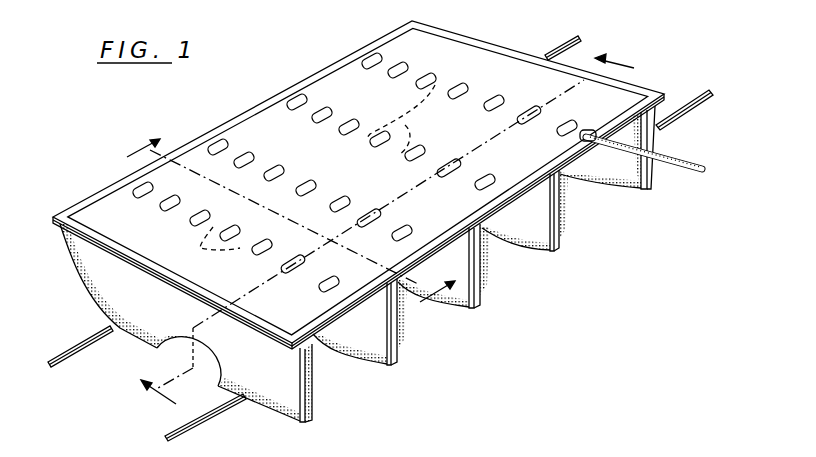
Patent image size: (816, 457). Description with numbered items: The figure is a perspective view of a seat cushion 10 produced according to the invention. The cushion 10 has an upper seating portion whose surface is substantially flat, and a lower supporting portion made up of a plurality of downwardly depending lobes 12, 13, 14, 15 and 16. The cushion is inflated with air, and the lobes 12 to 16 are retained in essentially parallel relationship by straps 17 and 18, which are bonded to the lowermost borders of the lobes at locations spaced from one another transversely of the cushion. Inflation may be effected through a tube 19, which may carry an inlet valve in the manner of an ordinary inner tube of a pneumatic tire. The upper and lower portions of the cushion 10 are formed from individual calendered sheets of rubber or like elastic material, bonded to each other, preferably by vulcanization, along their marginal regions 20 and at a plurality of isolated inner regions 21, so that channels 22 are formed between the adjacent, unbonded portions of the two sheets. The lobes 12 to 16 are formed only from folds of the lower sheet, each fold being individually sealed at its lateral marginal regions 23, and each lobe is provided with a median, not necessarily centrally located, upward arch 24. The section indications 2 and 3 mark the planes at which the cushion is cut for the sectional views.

The seat cushion 10 is at (459, 318).
The lobe 12 is at (272, 413).
The lobe 13 is at (364, 357).
The lobe 14 is at (485, 282).
The lobe 15 is at (566, 216).
The lobe 16 is at (608, 180).
The strap 17 is at (64, 355).
The strap 18 is at (181, 436).
The tube 19 is at (672, 170).
The marginal regions 20 is at (291, 90).
The isolated inner regions 21 is at (163, 206).
The channels 22 is at (303, 169).
The lateral marginal regions 23 is at (302, 421).
The upward arch 24 is at (206, 364).
The section line 2- 2 is at (383, 232).
The section line 3- 3 is at (278, 232).